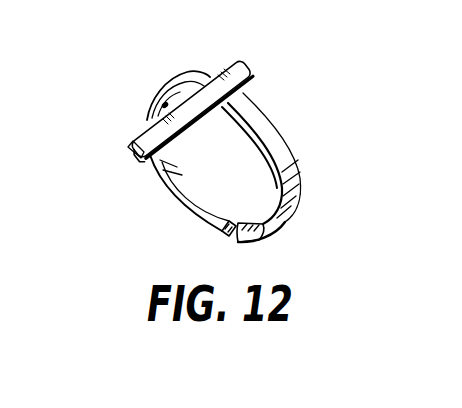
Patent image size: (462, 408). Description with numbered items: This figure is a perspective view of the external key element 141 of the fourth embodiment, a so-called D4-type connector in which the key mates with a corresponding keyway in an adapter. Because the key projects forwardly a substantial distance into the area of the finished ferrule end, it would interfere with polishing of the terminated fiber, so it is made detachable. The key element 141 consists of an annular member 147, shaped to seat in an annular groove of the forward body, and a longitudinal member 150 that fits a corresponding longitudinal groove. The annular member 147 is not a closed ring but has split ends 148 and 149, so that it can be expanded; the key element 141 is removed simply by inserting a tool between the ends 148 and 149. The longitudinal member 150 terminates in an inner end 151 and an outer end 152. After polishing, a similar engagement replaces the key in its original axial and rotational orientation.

The external key element 141 is at (293, 163).
The annular member 147 is at (255, 105).
The split end 148 is at (213, 233).
The split end 149 is at (243, 249).
The longitudinal member 150 is at (142, 137).
The inner end 151 is at (252, 57).
The outer end 152 is at (137, 158).